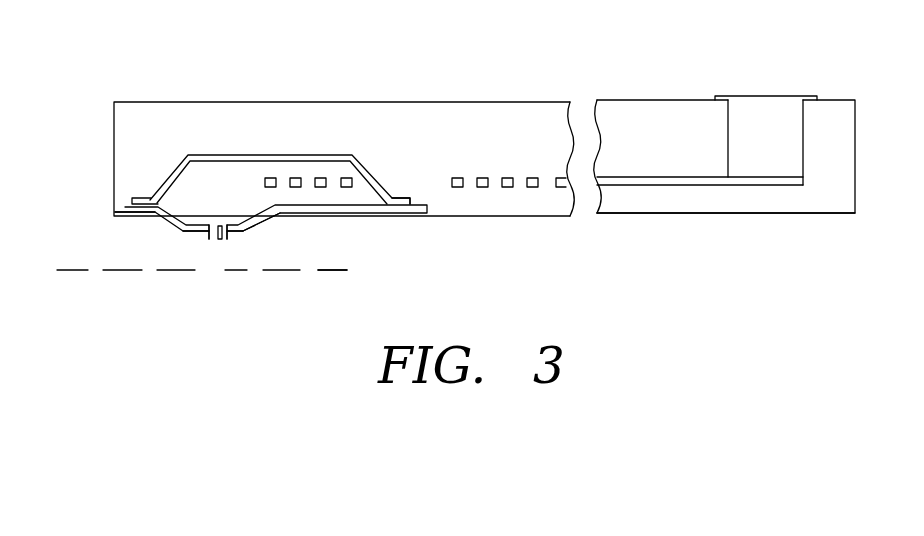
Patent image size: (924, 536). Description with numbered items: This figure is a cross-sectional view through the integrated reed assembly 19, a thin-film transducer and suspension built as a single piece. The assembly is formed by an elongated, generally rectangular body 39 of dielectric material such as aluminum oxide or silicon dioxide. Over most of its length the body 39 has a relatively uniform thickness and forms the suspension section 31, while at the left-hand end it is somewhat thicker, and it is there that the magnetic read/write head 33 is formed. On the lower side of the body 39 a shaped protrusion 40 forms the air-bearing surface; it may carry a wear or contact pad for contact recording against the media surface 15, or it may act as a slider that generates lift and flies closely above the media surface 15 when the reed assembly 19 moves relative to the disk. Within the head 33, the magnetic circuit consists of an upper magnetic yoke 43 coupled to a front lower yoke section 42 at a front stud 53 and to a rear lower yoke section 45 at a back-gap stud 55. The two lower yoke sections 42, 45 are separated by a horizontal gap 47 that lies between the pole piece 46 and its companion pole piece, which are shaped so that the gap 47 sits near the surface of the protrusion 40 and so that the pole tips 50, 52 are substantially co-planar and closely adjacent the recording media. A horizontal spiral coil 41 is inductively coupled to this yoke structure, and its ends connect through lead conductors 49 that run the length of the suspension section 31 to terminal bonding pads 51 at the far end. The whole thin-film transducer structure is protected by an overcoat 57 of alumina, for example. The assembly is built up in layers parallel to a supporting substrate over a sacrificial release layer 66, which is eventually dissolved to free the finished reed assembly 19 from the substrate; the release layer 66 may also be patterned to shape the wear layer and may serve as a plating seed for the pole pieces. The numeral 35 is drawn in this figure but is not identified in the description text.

The integrated reed assembly 19 is at (110, 62).
The overcoat 57 is at (145, 142).
The magnetic read/write head 33 is at (420, 92).
The upper magnetic yoke 43 is at (160, 192).
The horizontal spiral coil 41 is at (452, 178).
The back-gap stud 55 is at (410, 198).
The front stud 53 is at (125, 206).
The lower yoke section 42 is at (145, 218).
The pole piece 46 is at (187, 233).
The lower yoke section 45 is at (355, 205).
The sloped wall 35 is at (267, 234).
The release layer 66 is at (250, 243).
The pole tip 52 is at (228, 245).
The pole tip 50 is at (212, 242).
The horizontal gap 47 is at (217, 270).
The shaped protrusion 40 is at (165, 282).
The media surface 15 is at (333, 270).
The body 39 is at (520, 60).
The lead conductors 49 is at (653, 177).
The terminal bonding pads 51 is at (765, 94).
The suspension section 31 is at (860, 228).